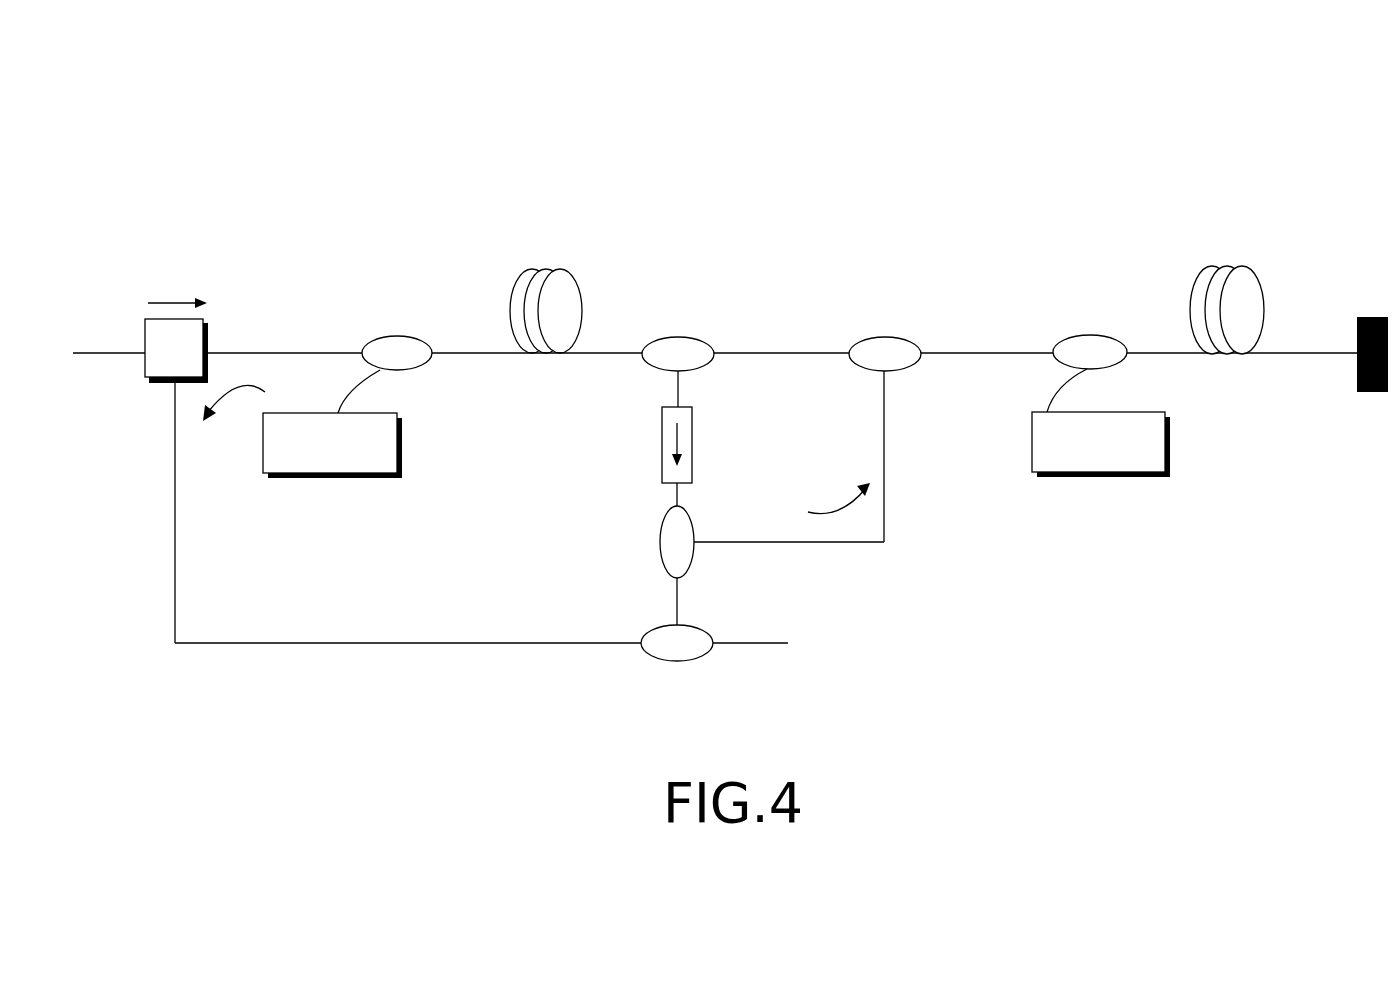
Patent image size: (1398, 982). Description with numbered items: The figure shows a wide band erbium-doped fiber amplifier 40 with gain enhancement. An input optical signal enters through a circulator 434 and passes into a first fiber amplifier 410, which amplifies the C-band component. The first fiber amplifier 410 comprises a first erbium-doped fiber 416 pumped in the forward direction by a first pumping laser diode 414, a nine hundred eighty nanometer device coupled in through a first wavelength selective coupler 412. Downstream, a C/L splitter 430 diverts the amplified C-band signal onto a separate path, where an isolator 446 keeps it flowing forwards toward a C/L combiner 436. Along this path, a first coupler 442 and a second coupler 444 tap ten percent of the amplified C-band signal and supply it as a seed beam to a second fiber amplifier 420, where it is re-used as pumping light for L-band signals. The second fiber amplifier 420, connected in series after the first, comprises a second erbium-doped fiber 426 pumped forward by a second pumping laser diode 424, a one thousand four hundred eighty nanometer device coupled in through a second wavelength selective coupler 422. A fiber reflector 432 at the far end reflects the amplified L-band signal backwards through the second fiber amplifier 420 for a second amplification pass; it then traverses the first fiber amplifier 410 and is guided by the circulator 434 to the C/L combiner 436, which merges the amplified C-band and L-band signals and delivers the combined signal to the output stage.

The fiber amplifier 40 is at (812, 169).
The first fiber amplifier 410 is at (488, 272).
The first wavelength selective coupler 412 is at (366, 345).
The first pumping laser diode 414 is at (348, 478).
The first erbium-doped fiber 416 is at (573, 278).
The second fiber amplifier 420 is at (1157, 266).
The second wavelength selective coupler 422 is at (1060, 343).
The second pumping laser diode 424 is at (1100, 477).
The second erbium-doped fiber 426 is at (1256, 268).
The C/L splitter 430 is at (707, 365).
The fiber reflector 432 is at (1372, 393).
The circulator 434 is at (145, 365).
The C/L combiner 436 is at (697, 628).
The first coupler 442 is at (693, 522).
The second coupler 444 is at (915, 365).
The isolator 446 is at (662, 432).